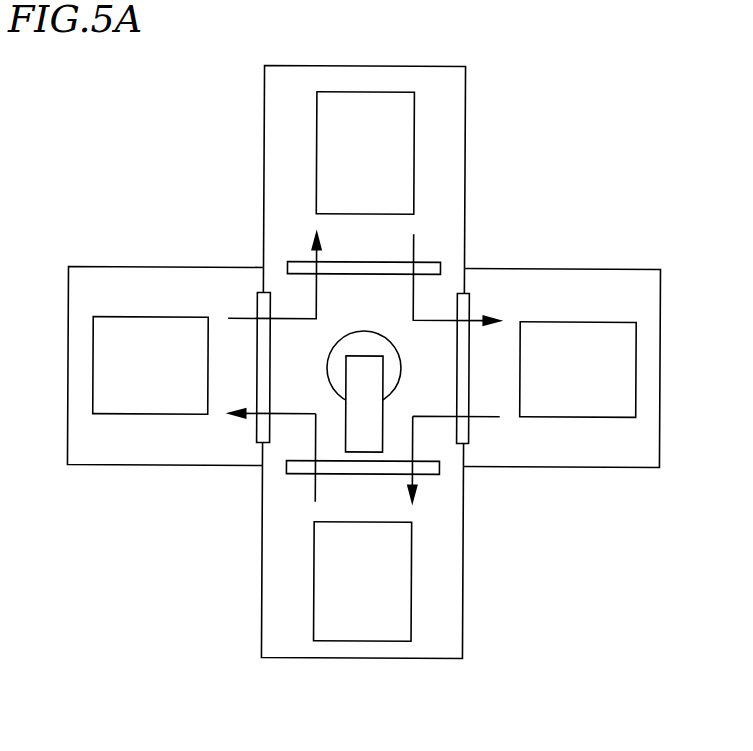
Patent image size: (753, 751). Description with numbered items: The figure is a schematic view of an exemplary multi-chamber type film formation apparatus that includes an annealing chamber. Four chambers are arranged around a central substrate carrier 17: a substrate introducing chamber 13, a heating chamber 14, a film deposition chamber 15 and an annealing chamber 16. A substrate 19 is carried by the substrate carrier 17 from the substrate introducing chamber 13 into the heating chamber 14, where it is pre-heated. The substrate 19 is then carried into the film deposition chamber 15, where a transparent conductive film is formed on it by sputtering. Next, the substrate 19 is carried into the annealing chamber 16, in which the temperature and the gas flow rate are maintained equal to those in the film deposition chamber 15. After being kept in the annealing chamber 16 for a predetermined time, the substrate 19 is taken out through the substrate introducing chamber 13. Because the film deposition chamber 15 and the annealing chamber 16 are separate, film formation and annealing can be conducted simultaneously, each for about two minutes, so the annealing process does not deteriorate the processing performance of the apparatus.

The substrate introducing chamber 13 is at (103, 280).
The heating chamber 14 is at (453, 198).
The film deposition chamber 15 is at (645, 297).
The annealing chamber 16 is at (455, 562).
The substrate carrier 17 is at (338, 411).
The substrate 19 is at (153, 337).